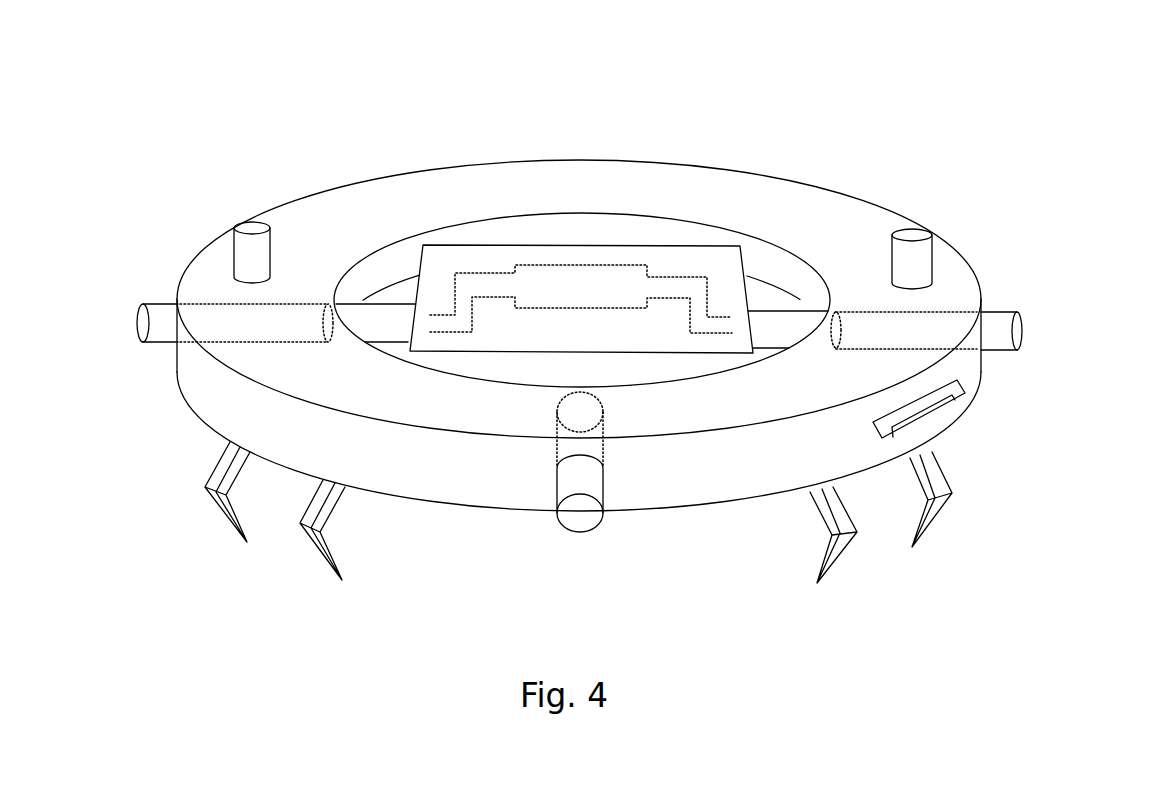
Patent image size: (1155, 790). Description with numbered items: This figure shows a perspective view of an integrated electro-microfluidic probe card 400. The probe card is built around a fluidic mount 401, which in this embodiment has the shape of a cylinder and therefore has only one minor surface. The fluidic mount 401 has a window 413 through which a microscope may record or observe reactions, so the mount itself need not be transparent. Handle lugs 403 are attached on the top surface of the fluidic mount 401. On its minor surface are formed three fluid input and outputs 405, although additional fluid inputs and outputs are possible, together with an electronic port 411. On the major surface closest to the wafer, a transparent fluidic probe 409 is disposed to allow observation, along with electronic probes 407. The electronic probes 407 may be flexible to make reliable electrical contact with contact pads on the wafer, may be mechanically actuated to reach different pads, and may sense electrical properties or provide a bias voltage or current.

The integrated electro-microfluidic probe card 400 is at (257, 123).
The fluidic mount 401 is at (672, 165).
The handle lugs 403 is at (922, 250).
The fluid input and outputs 405 is at (160, 303).
The electronic probes 407 is at (310, 545).
The fluidic probe 409 is at (530, 245).
The electronic port 411 is at (965, 392).
The window 413 is at (773, 248).